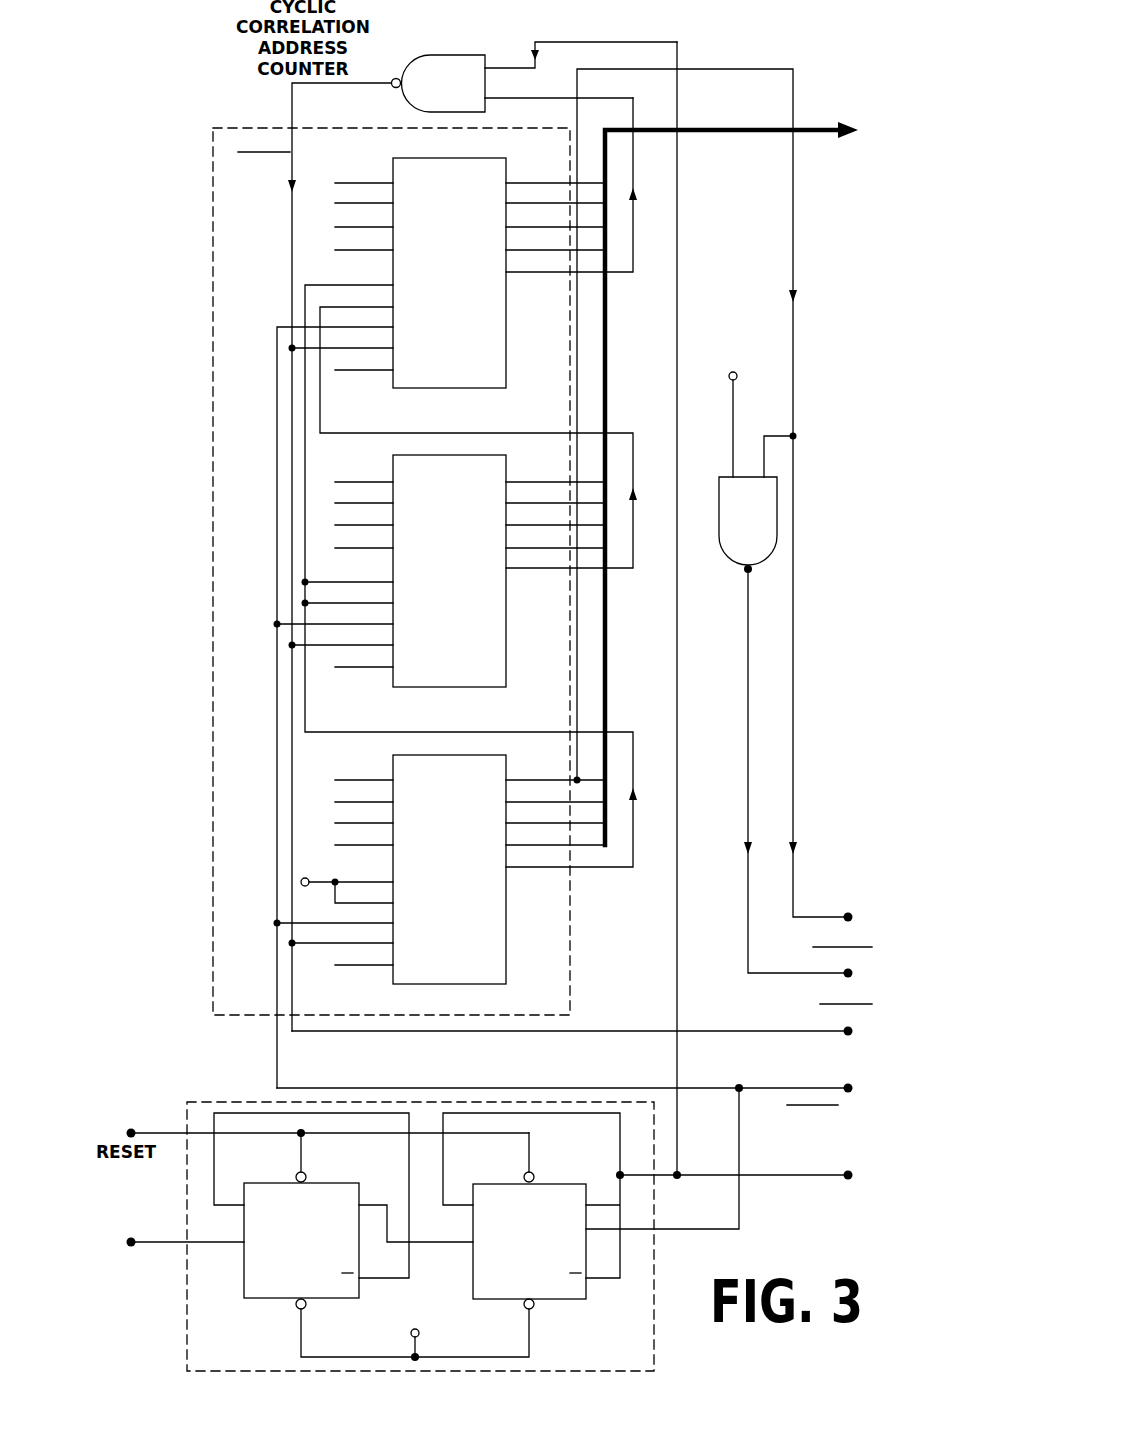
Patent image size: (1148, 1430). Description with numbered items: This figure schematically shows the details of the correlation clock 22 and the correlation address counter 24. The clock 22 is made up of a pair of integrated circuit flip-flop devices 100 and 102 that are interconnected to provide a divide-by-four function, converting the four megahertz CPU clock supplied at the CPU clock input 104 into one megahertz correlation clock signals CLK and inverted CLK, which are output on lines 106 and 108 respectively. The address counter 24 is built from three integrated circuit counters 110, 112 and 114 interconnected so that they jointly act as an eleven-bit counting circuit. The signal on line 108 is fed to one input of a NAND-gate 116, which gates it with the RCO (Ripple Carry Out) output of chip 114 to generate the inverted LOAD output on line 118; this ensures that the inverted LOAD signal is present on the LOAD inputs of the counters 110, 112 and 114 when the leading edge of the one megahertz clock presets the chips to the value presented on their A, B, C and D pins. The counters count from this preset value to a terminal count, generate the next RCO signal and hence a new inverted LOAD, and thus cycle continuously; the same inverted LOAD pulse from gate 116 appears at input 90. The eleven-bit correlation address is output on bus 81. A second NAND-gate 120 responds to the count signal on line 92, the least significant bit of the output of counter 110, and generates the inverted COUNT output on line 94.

The NAND-gate 116 is at (470, 52).
The line 118 is at (355, 83).
The line 92 is at (762, 68).
The bus 81 is at (775, 128).
The integrated circuit counter 114 is at (506, 355).
The integrated circuit counter 112 is at (506, 654).
The integrated circuit counter 110 is at (506, 952).
The second NAND-gate 120 is at (724, 548).
The line 94 is at (748, 830).
The correlation address counter 24 is at (262, 1018).
The input 90 is at (645, 1030).
The line 106 is at (642, 1086).
The line 108 is at (677, 1108).
The correlation clock 22 is at (655, 1194).
The CPU clock input 104 is at (158, 1238).
The integrated circuit flip-flop device 100 is at (262, 1300).
The integrated circuit flip-flop device 102 is at (560, 1300).